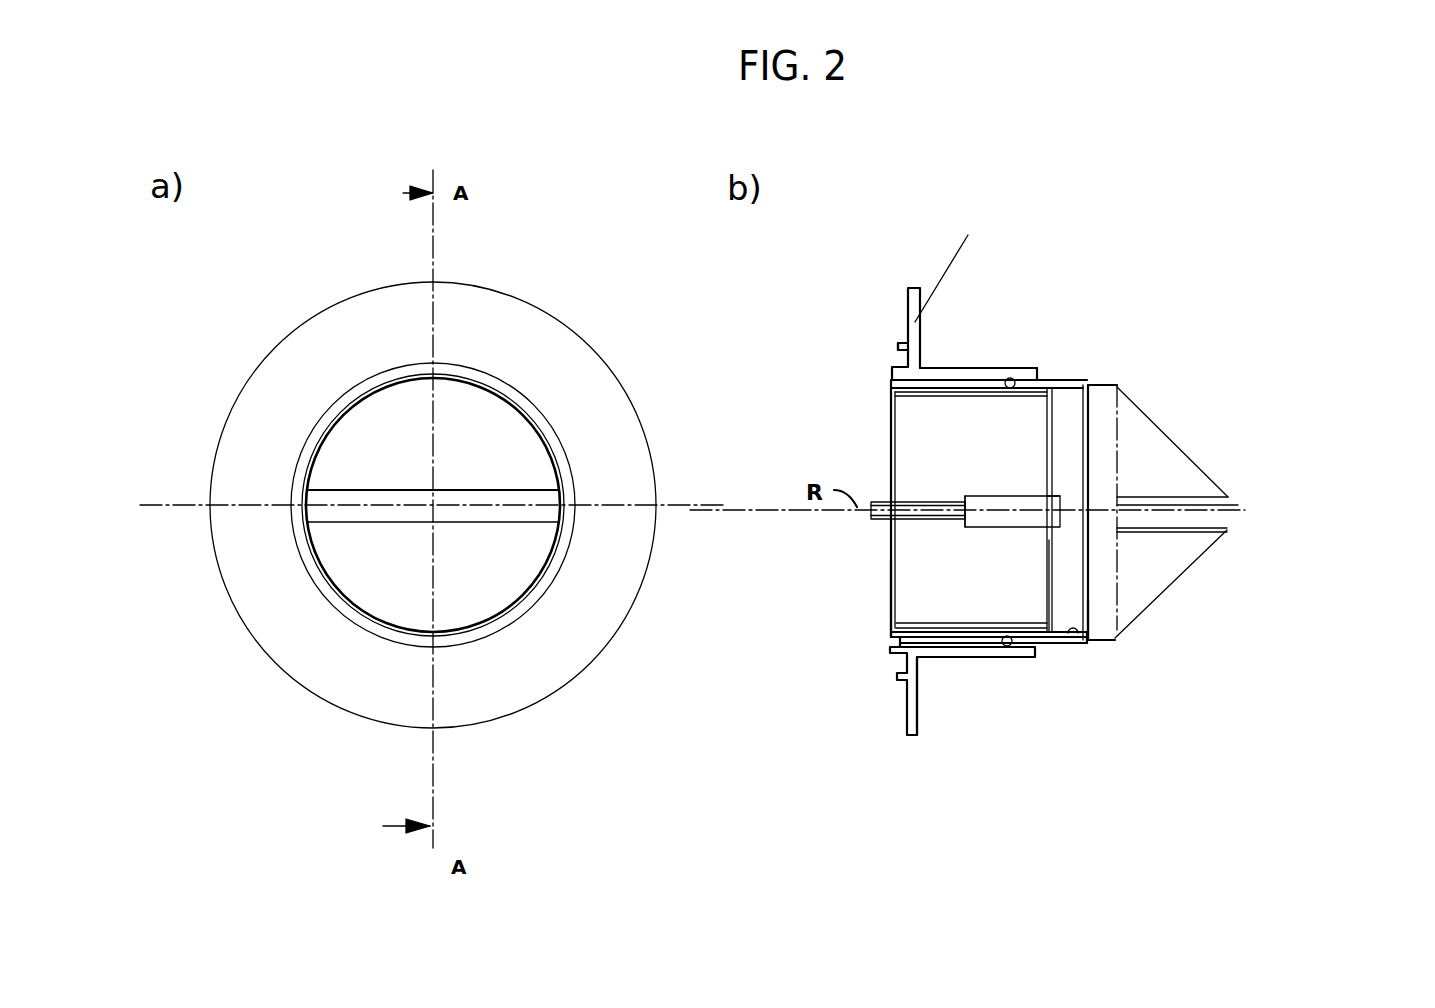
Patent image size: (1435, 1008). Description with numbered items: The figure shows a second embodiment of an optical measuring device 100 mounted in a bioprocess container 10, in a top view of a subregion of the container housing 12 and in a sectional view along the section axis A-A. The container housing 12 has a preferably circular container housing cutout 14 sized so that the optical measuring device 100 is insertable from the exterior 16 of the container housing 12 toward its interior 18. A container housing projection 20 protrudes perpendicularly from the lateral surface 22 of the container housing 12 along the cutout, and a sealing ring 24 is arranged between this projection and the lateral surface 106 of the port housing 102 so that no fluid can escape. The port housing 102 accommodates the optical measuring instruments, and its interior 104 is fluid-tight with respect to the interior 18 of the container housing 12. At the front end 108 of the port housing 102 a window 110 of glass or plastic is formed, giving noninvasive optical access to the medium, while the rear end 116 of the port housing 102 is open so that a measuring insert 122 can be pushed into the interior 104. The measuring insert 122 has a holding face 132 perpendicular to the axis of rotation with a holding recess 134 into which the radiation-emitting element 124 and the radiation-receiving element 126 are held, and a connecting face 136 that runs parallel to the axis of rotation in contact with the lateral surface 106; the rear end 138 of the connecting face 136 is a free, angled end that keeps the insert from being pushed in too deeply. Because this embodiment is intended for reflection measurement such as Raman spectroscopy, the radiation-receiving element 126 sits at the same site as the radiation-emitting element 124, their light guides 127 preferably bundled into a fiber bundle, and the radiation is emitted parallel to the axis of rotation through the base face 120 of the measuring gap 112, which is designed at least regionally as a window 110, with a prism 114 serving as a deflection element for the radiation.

The bioprocess container 10 is at (1017, 236).
The container housing 12 is at (907, 715).
The container housing cutout 14 is at (955, 382).
The exterior 16 is at (908, 296).
The interior 18 is at (918, 703).
The container housing projection 20 is at (1039, 309).
The lateral surface 22 is at (908, 320).
The sealing ring 24 is at (1118, 357).
The optical measuring device 100 is at (1057, 643).
The port housing 102 is at (1075, 387).
The interior 104 is at (1087, 643).
The lateral surface 106 is at (1043, 643).
The front end 108 is at (1085, 642).
The window 110 is at (1102, 617).
The measuring gap 112 is at (1255, 536).
The prism 114 is at (1187, 560).
The rear end 116 is at (891, 383).
The base face 120 is at (1238, 505).
The measuring insert 122 is at (1052, 565).
The radiation-emitting element 124 is at (970, 527).
The radiation-receiving element 126 is at (990, 527).
The light guide 127 is at (825, 507).
The holding face 132 is at (1046, 437).
The holding recess 134 is at (1050, 495).
The connecting face 136 is at (917, 397).
The rear end 138 is at (889, 621).